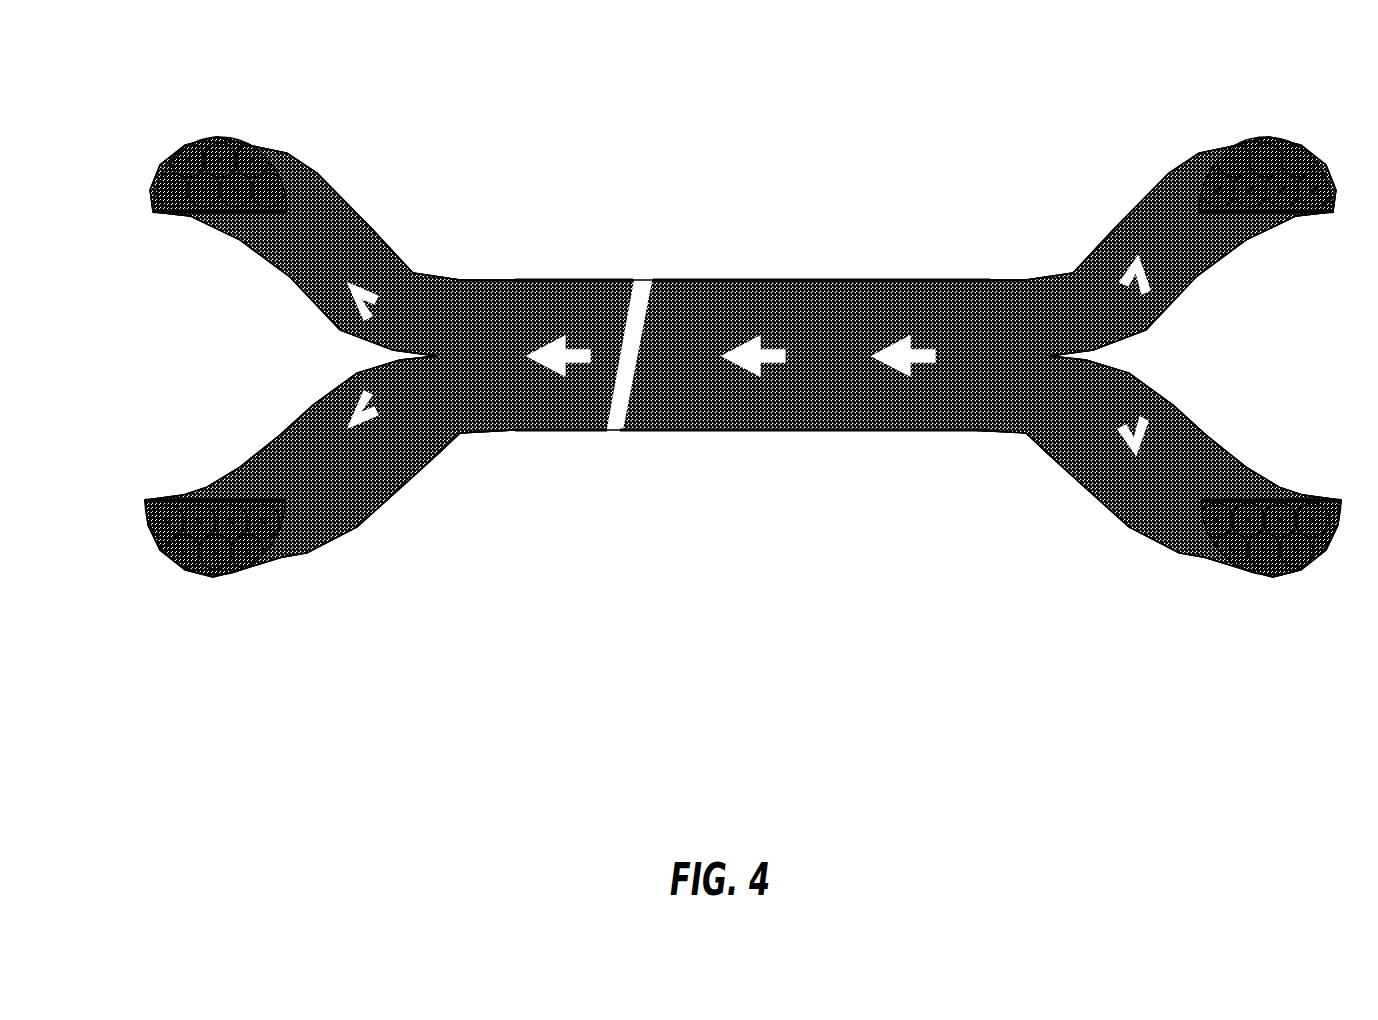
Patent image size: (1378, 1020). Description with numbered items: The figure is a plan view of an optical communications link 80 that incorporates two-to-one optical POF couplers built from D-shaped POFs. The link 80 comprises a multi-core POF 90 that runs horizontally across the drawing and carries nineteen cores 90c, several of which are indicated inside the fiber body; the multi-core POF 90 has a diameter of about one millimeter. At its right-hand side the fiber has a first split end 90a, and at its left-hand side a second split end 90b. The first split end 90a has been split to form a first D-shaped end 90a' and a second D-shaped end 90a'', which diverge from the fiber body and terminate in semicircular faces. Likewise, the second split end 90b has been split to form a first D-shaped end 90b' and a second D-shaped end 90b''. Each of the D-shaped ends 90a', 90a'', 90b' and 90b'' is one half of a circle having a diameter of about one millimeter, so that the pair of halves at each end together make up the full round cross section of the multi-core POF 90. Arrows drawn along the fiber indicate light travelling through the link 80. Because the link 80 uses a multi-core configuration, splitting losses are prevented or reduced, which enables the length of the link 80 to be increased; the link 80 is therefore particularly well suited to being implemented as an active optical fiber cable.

The optical communications link 80 is at (1208, 103).
The multi-core POF 90 is at (730, 250).
The first split end 90a is at (1174, 357).
The first D-shaped end 90a' is at (1266, 216).
The second D-shaped end 90a'' is at (1270, 484).
The second split end 90b is at (283, 357).
The first D-shaped end 90b' is at (218, 226).
The second D-shaped end 90b'' is at (215, 483).
The cores 90c is at (612, 328).